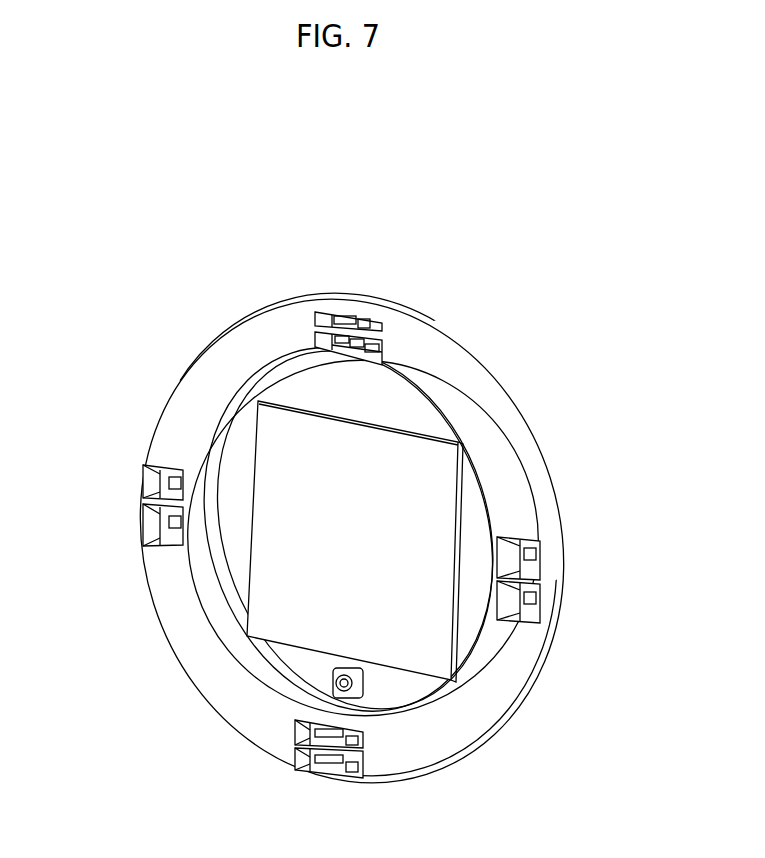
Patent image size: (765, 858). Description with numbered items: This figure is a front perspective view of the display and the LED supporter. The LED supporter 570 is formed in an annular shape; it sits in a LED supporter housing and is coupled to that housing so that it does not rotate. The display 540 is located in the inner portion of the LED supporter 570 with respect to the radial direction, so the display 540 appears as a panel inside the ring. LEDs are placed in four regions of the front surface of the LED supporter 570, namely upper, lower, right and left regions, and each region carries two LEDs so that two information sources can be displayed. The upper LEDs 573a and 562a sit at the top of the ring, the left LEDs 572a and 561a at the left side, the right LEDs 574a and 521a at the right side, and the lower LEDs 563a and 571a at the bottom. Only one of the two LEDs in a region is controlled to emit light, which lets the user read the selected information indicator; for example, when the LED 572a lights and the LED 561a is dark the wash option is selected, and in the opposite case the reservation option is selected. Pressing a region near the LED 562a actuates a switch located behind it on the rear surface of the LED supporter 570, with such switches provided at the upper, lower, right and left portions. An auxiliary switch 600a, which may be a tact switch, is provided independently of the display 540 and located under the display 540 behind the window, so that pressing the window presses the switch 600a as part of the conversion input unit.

The LED supporter 570 is at (438, 316).
The display 540 is at (433, 650).
The upper LED 573a is at (318, 322).
The upper LED 562a is at (320, 344).
The left LED 572a is at (150, 474).
The left LED 561a is at (152, 521).
The right LED 574a is at (510, 548).
The right LED 521a is at (533, 608).
The lower LED 563a is at (332, 770).
The lower LED 571a is at (363, 748).
The auxiliary switch 600a is at (330, 688).